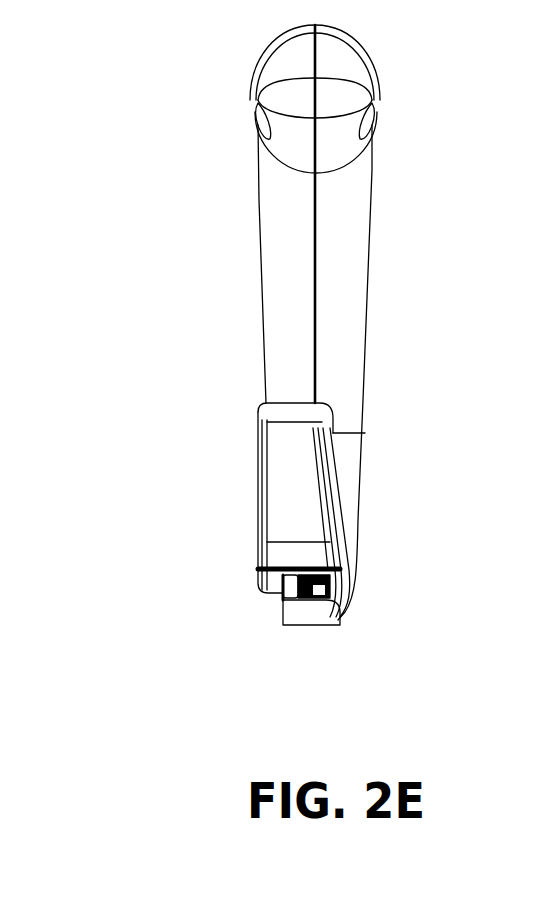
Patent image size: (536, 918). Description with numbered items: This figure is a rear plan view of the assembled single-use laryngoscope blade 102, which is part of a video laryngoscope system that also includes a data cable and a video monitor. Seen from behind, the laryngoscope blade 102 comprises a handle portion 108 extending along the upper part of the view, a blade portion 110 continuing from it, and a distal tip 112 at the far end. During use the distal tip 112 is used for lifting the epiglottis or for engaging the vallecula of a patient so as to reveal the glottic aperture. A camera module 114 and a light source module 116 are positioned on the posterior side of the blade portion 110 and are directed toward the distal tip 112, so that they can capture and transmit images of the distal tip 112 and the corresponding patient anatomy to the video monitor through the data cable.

The laryngoscope blade 102 is at (407, 215).
The handle portion 108 is at (277, 244).
The blade portion 110 is at (347, 493).
The distal tip 112 is at (278, 412).
The camera module 114 is at (290, 613).
The light source module 116 is at (327, 600).